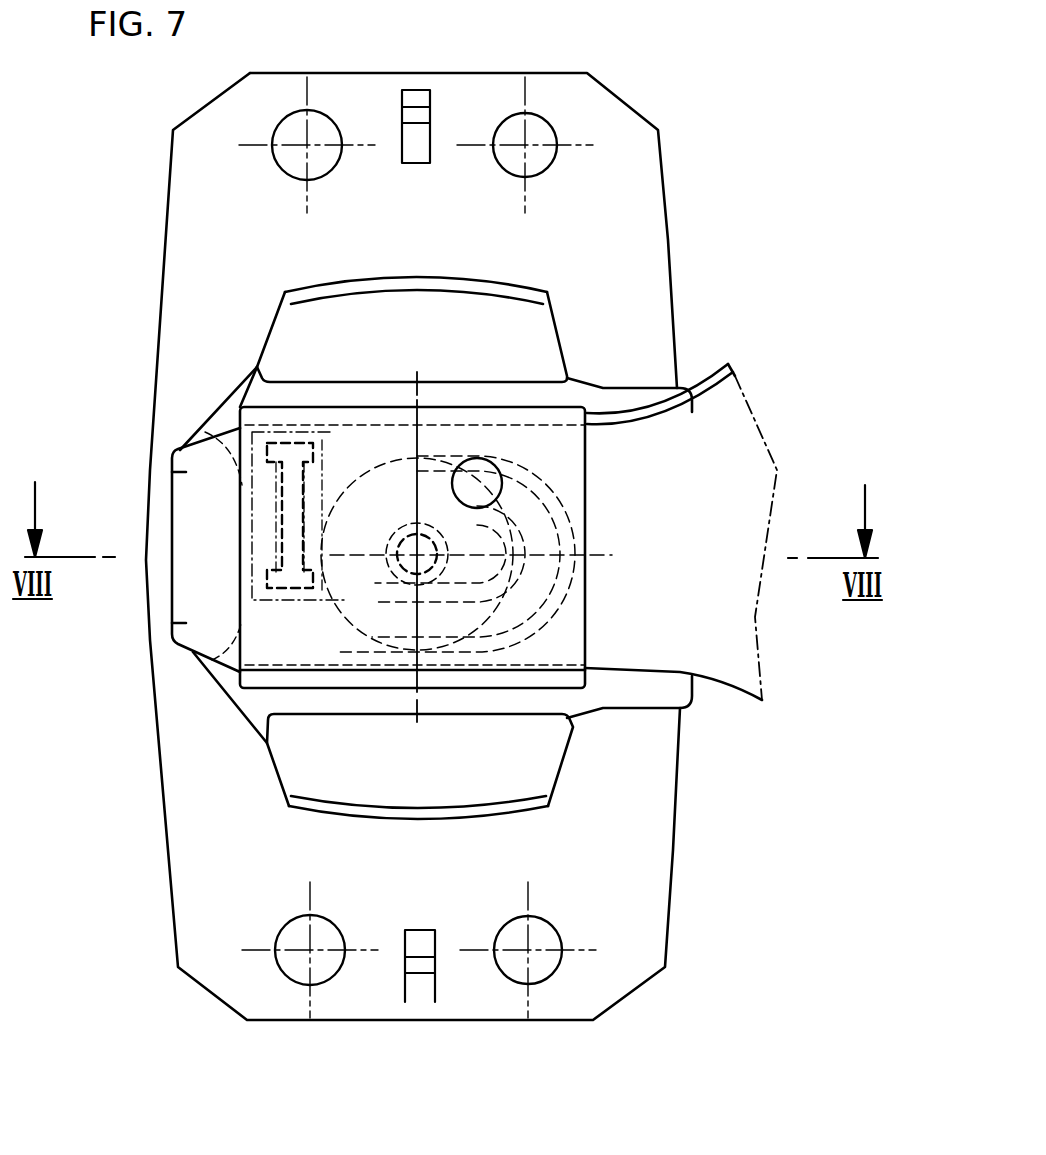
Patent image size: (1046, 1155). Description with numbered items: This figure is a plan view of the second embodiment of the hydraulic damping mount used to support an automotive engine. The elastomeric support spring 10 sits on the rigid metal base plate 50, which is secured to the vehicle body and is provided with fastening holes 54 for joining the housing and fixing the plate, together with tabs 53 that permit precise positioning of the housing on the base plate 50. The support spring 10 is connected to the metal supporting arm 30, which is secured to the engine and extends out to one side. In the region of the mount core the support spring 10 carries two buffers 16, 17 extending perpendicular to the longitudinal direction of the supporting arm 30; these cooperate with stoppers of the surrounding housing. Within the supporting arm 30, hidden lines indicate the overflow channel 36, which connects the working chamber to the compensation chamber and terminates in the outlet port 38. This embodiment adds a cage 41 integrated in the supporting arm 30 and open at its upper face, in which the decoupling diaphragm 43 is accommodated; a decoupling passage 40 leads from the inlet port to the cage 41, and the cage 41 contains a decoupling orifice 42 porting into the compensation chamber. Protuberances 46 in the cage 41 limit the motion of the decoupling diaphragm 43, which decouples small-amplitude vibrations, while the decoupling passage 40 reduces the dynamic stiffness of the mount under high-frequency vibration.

The support spring 10 is at (253, 356).
The buffer 16 is at (446, 305).
The buffer 17 is at (441, 790).
The supporting arm 30 is at (745, 440).
The overflow channel 36 is at (587, 525).
The outlet port 38 is at (222, 703).
The decoupling passage 40 is at (391, 473).
The cage 41 is at (250, 566).
The decoupling orifice 42 is at (207, 412).
The decoupling diaphragm 43 is at (316, 440).
The protuberances 46 is at (268, 520).
The base plate 50 is at (652, 218).
The tabs 53 is at (412, 105).
The fastening holes 54 is at (534, 122).